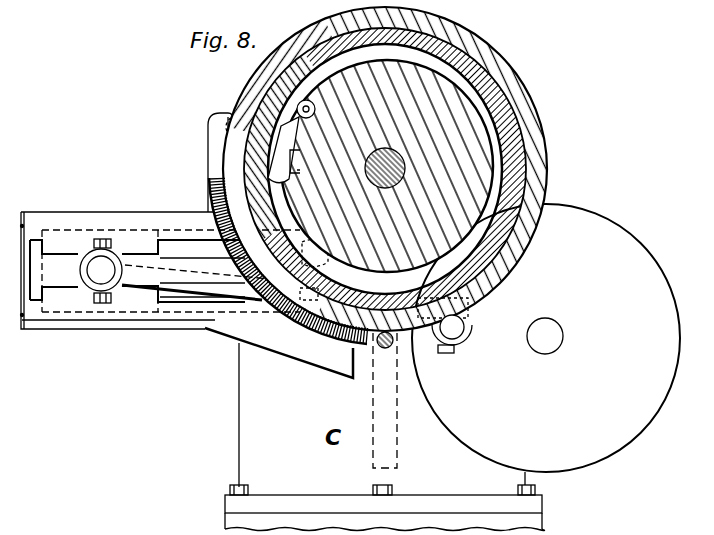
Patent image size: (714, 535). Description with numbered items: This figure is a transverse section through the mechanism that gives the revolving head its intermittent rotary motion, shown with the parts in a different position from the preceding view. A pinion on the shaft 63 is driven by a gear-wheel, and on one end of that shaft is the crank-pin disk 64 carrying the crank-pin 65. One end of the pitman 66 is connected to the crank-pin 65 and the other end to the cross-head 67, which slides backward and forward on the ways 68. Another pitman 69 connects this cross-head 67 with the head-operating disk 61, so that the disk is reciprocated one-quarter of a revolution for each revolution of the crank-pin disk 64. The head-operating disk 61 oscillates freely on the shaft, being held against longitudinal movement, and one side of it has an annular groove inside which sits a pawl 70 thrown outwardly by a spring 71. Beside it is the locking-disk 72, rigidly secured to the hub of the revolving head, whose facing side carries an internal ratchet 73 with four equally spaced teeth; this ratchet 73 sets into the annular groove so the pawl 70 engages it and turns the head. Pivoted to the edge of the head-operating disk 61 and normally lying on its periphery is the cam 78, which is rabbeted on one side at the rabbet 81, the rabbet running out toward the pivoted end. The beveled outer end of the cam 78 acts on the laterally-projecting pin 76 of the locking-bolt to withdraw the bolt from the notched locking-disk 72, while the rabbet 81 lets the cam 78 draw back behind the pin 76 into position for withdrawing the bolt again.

The head-operating disk 61 is at (387, 166).
The shaft 63 is at (545, 336).
The crank-pin disk 64 is at (546, 344).
The crank-pin 65 is at (462, 331).
The pitman 66 is at (192, 293).
The cross-head 67 is at (59, 294).
The ways 68 is at (161, 270).
The pitman 69 is at (212, 273).
The pawl 70 is at (300, 126).
The spring 71 is at (300, 153).
The locking-disk 72 is at (518, 122).
The internal ratchet 73 is at (356, 64).
The laterally-projecting pin 76 is at (385, 400).
The cam 78 is at (336, 342).
The rabbet 81 is at (228, 164).